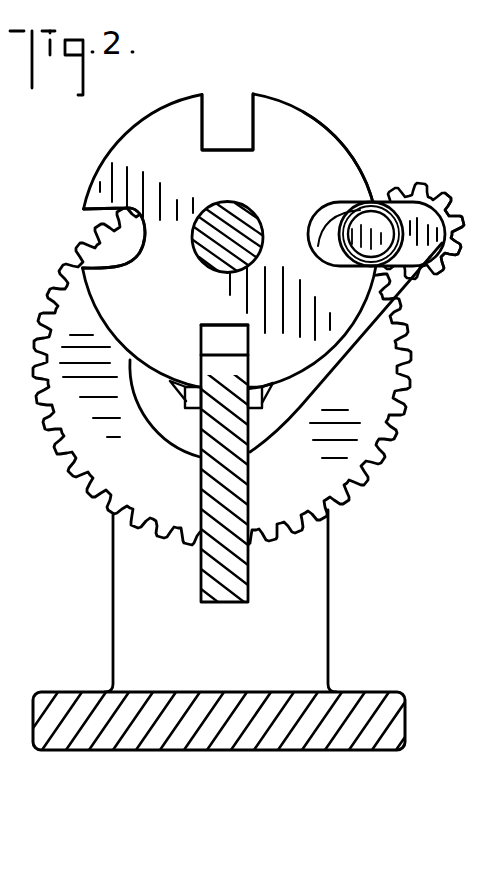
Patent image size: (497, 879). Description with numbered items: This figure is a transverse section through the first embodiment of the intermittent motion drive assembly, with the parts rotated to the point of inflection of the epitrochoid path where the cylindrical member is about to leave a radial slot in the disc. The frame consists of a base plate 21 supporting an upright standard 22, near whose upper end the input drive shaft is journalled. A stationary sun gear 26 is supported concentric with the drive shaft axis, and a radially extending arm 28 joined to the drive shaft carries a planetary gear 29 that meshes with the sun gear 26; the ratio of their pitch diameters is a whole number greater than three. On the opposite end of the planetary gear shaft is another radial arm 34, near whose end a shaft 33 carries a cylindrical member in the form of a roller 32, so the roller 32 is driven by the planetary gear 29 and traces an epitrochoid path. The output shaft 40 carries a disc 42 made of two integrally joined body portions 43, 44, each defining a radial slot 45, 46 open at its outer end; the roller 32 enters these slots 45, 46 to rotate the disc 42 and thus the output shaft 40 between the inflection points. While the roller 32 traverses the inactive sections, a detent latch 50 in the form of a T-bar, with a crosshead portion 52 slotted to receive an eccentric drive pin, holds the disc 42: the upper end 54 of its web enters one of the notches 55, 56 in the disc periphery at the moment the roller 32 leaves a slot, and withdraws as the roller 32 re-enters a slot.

The base plate 21 is at (63, 690).
The upright standard 22 is at (127, 632).
The stationary sun gear 26 is at (367, 433).
The radially extending arm 28 is at (387, 293).
The planetary gear 29 is at (393, 187).
The roller 32 is at (433, 195).
The shaft 33 is at (369, 260).
The radial arm 34 is at (430, 262).
The output shaft 40 is at (222, 206).
The disc 42 is at (172, 100).
The body portion 43 is at (331, 188).
The body portion 44 is at (130, 203).
The radial slot 45 is at (313, 246).
The radial slot 46 is at (88, 210).
The latch 50 is at (200, 567).
The crosshead portion 52 is at (187, 395).
The upper end 54 is at (232, 374).
The notch 55 is at (215, 328).
The notch 56 is at (252, 97).